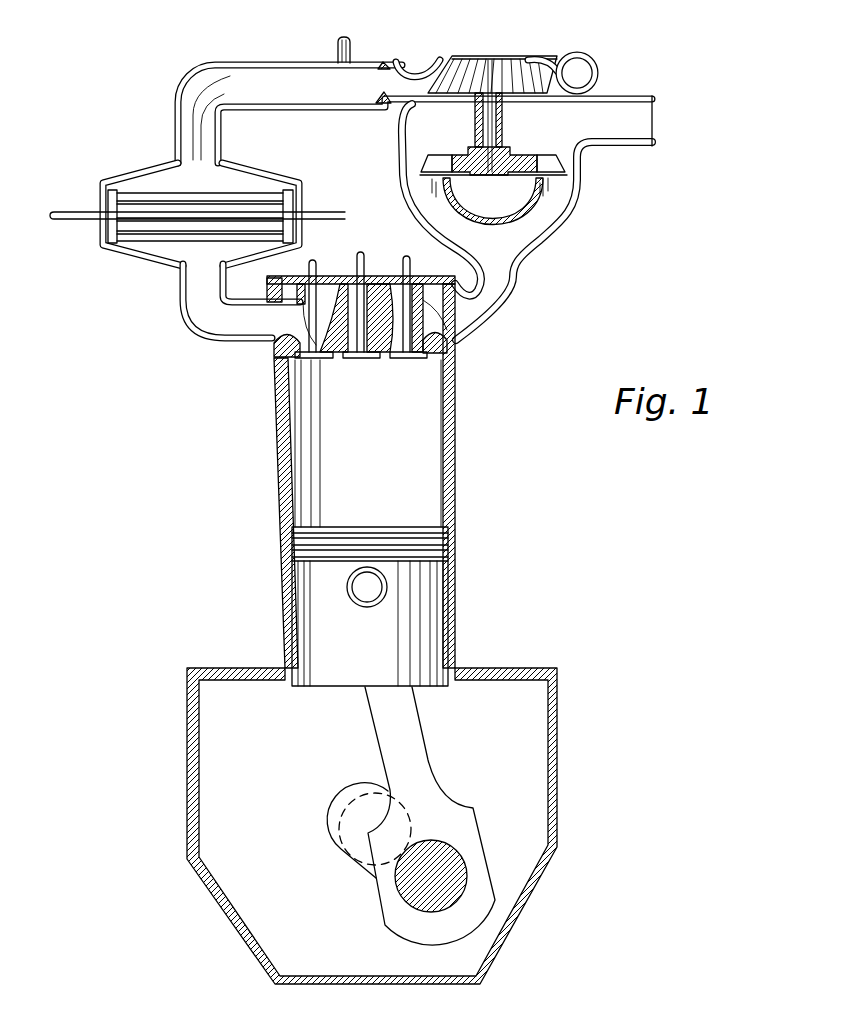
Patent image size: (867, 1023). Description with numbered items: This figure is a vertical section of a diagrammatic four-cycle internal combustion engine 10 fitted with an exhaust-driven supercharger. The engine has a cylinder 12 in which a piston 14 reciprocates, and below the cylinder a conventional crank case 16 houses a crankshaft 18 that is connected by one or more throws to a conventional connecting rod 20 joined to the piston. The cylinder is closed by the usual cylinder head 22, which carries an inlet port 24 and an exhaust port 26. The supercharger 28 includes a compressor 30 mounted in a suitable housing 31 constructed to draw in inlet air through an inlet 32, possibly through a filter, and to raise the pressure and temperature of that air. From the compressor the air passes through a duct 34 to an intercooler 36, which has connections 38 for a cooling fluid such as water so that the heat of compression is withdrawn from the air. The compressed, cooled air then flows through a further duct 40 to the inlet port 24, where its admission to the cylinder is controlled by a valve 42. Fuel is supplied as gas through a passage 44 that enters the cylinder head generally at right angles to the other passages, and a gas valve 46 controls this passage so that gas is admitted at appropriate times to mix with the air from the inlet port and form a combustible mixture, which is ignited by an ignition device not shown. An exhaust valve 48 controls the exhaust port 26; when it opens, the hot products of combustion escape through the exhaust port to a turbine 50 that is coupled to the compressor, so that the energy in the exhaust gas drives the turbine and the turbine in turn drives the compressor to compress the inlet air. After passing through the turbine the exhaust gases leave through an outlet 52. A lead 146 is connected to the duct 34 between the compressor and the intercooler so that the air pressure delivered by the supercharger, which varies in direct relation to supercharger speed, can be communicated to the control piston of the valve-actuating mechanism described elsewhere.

The internal combustion engine 10 is at (485, 549).
The cylinder 12 is at (457, 482).
The piston 14 is at (370, 542).
The crank case 16 is at (566, 764).
The crankshaft 18 is at (350, 832).
The connecting rod 20 is at (424, 765).
The cylinder head 22 is at (327, 277).
The inlet port 24 is at (297, 322).
The exhaust port 26 is at (427, 320).
The supercharger 28 is at (570, 210).
The compressor 30 is at (534, 60).
The housing 31 is at (598, 66).
The inlet 32 is at (478, 53).
The duct 34 is at (242, 78).
The intercooler 36 is at (135, 262).
The connections 38 is at (66, 214).
The duct 40 is at (213, 323).
The valve 42 is at (313, 359).
The passage 44 is at (369, 306).
The gas valve 46 is at (361, 363).
The exhaust valve 48 is at (407, 363).
The turbine 50 is at (552, 162).
The outlet 52 is at (640, 125).
The lead 146 is at (353, 42).